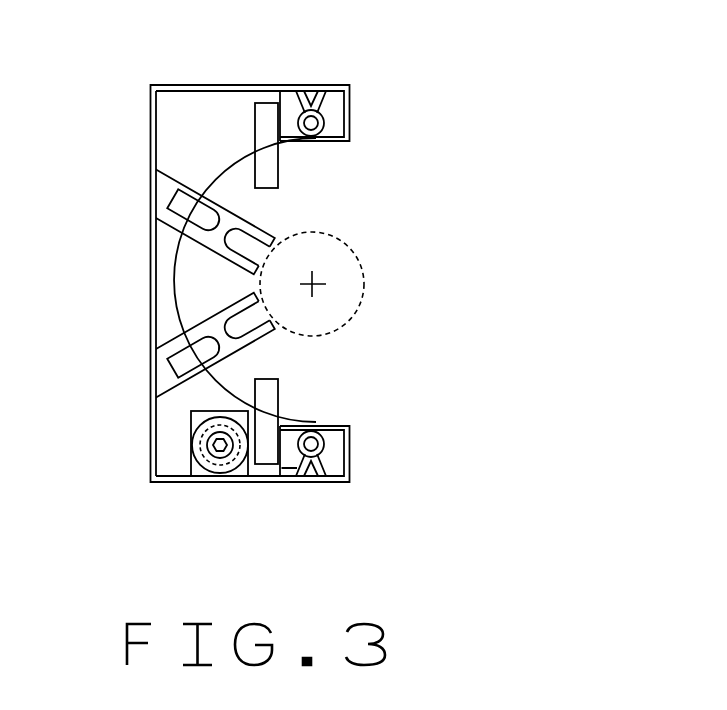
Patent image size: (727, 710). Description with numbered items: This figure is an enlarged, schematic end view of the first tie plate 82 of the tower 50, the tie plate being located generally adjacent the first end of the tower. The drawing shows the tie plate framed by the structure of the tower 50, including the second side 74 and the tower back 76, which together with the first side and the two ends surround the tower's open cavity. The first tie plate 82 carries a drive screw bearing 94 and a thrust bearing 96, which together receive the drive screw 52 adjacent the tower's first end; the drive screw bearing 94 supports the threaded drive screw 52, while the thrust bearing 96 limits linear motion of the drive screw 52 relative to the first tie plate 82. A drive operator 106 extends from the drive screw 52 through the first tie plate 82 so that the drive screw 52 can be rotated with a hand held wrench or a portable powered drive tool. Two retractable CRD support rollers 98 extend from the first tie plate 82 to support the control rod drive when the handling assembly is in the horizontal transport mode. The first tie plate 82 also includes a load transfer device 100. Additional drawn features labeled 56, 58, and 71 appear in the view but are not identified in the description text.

The tower 50 is at (110, 275).
The drive screw 52 is at (235, 455).
The upper latch 56 is at (319, 131).
The lower latch 58 is at (323, 440).
The lower flange 71 is at (288, 483).
The second side 74 is at (270, 86).
The tower back 76 is at (150, 340).
The first tie plate 82 is at (202, 157).
The drive screw bearing 94 is at (195, 470).
The thrust bearing 96 is at (222, 467).
The CRD support roller 98 is at (220, 333).
The load transfer device 100 is at (256, 125).
The drive operator 106 is at (208, 443).